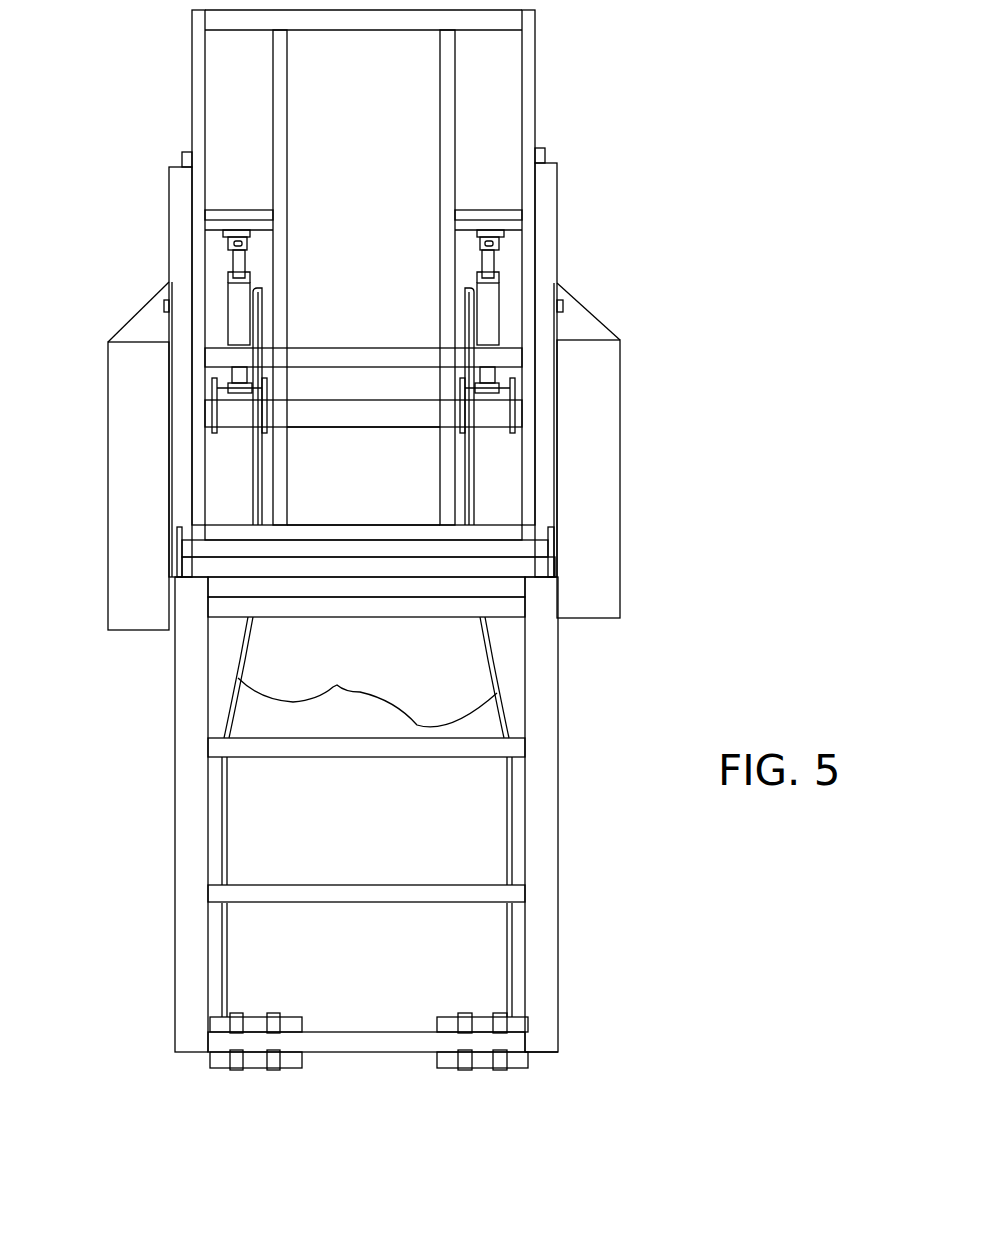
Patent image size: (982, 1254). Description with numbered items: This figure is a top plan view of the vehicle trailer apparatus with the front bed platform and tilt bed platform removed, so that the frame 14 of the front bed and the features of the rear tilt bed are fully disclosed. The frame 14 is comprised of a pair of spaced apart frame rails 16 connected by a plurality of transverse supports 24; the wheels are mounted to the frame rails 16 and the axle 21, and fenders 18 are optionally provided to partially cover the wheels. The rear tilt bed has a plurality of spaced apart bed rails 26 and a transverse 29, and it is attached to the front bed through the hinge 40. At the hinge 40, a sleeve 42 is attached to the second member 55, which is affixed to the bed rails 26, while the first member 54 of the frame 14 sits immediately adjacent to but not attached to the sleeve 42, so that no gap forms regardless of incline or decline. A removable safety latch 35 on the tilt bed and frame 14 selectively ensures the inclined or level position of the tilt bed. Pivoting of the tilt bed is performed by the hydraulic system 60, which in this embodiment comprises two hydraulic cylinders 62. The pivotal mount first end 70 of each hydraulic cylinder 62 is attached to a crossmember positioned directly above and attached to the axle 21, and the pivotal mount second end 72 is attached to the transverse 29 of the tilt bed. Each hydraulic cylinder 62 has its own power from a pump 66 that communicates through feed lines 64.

The frame 14 is at (582, 993).
The frame rails 16 is at (168, 953).
The fenders 18 is at (108, 397).
The axle 21 is at (363, 430).
The transverse supports 24 is at (386, 347).
The bed rails 26 is at (192, 33).
The transverse 29 is at (242, 208).
The safety latch 35 is at (163, 178).
The hinge 40 is at (573, 531).
The sleeve 42 is at (217, 549).
The first member 54 is at (333, 563).
The second member 55 is at (407, 523).
The hydraulic system 60 is at (279, 324).
The hydraulic cylinders 62 is at (262, 269).
The feed lines 64 is at (367, 707).
The pump 66 is at (437, 1068).
The pivotal mount first end 70 is at (237, 395).
The pivotal mount second end 72 is at (233, 240).